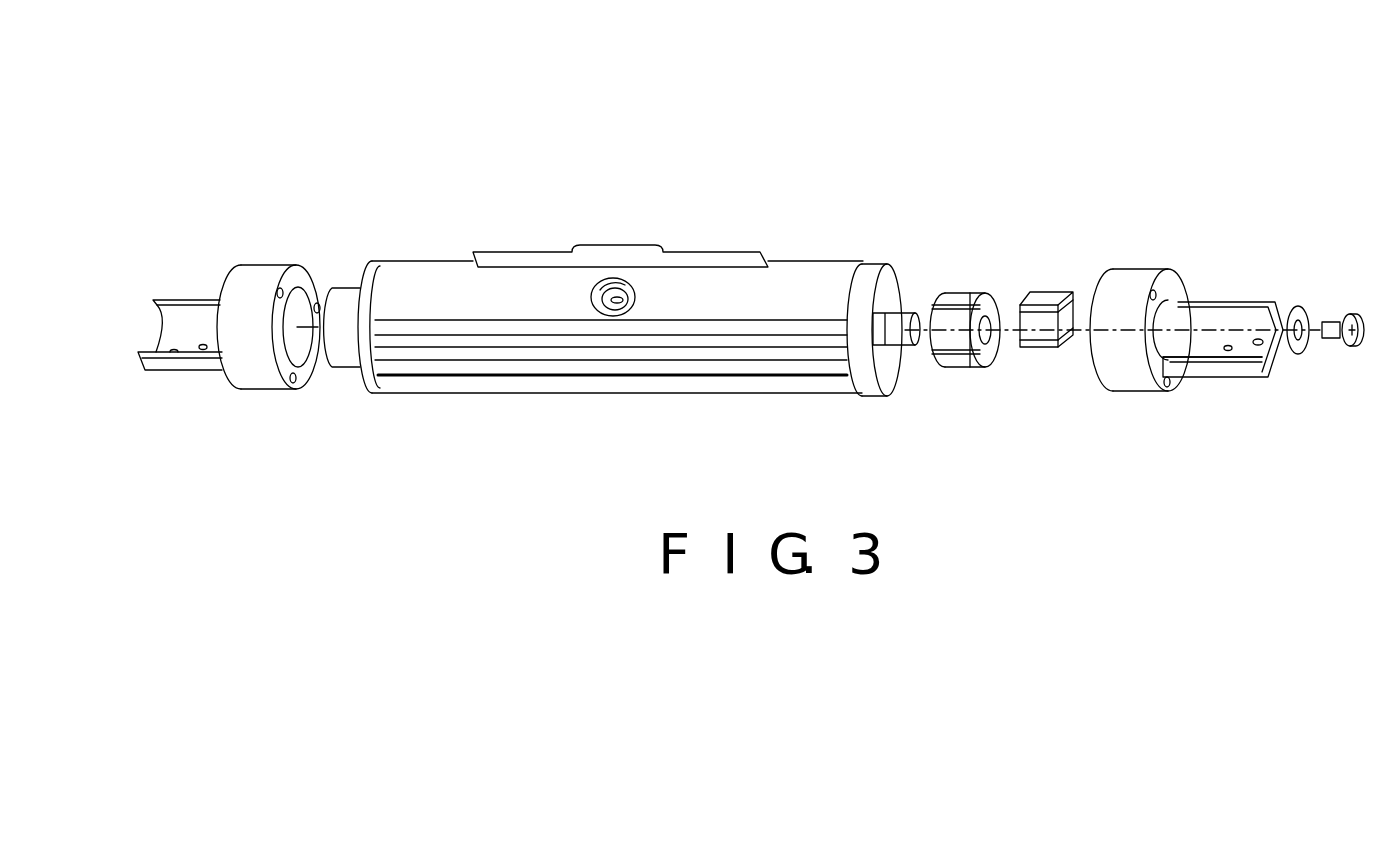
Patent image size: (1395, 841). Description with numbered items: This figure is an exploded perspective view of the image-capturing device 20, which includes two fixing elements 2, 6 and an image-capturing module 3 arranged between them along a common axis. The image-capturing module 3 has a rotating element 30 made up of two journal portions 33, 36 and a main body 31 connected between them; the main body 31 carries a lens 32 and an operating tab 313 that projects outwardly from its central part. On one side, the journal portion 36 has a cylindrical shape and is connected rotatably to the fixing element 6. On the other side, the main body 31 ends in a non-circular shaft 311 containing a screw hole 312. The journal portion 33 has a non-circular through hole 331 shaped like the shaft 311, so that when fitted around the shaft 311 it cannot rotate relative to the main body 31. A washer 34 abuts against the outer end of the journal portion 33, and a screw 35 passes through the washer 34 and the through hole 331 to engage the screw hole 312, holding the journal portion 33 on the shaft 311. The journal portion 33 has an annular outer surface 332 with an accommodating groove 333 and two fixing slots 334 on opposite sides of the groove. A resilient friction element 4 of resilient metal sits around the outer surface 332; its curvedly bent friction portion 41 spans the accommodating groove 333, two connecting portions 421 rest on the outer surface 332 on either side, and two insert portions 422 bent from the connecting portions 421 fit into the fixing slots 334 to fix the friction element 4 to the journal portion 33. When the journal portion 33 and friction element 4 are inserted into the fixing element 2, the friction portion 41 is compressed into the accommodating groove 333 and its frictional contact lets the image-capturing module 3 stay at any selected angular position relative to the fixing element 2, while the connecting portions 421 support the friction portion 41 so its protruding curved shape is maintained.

The fixing element 2 is at (1211, 288).
The image-capturing module 3 is at (650, 294).
The resilient friction element 4 is at (1081, 304).
The fixing element 6 is at (264, 252).
The image-capturing device 20 is at (310, 225).
The rotating element 30 is at (650, 305).
The main body 31 is at (713, 383).
The lens 32 is at (612, 306).
The journal portion 33 is at (975, 305).
The washer 34 is at (1298, 343).
The screw 35 is at (1357, 323).
The journal portion 36 is at (326, 290).
The friction portion 41 is at (1027, 306).
The non-circular shaft 311 is at (903, 308).
The screw hole 312 is at (903, 342).
The operating tab 313 is at (612, 250).
The non-circular through hole 331 is at (998, 308).
The outer surface 332 is at (955, 353).
The accommodating groove 333 is at (950, 307).
The fixing slots 334 is at (988, 306).
The connecting portions 421 is at (1060, 296).
The insert portions 422 is at (1088, 300).